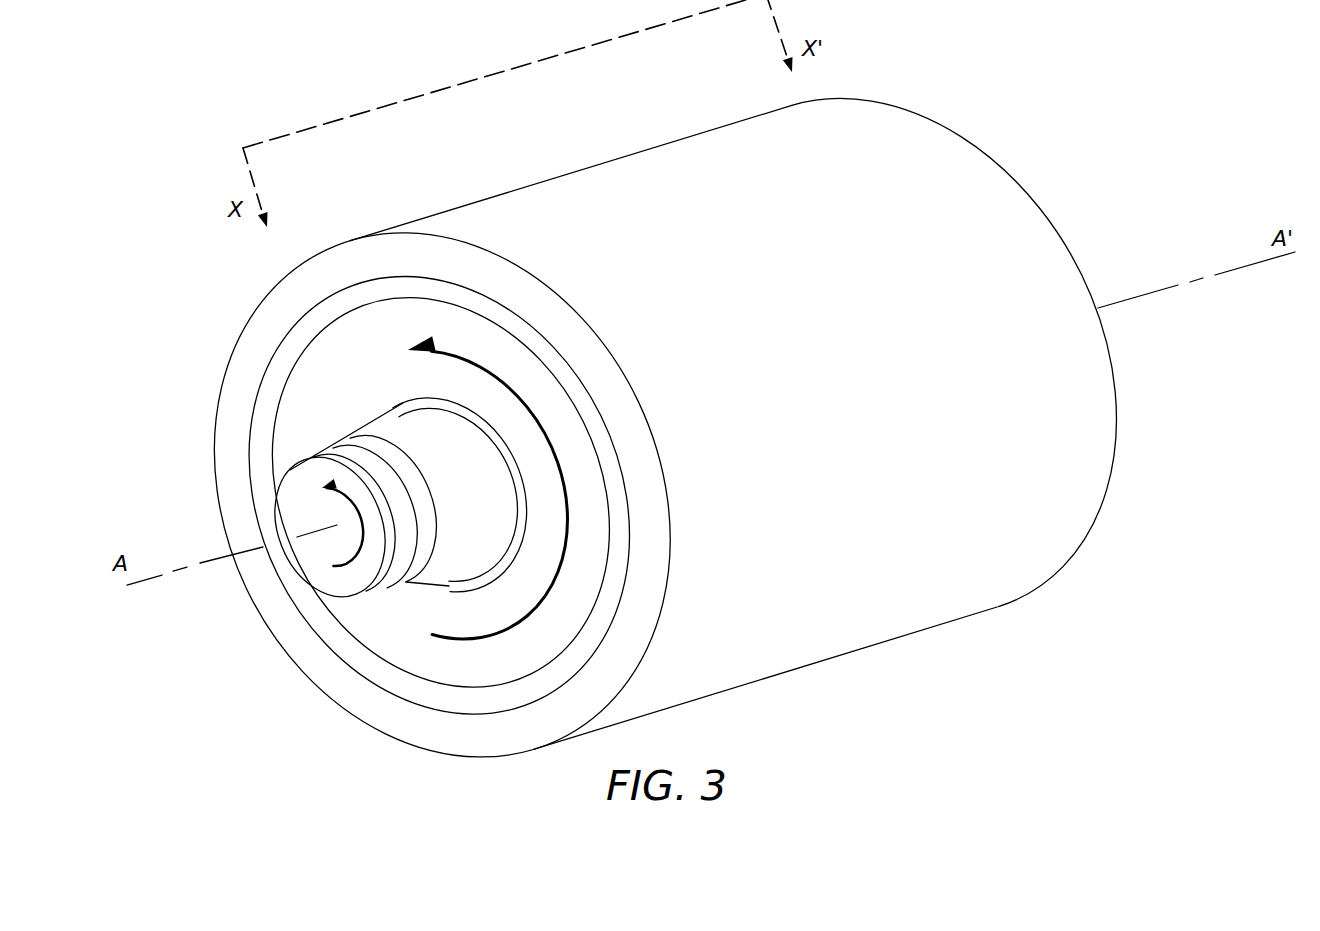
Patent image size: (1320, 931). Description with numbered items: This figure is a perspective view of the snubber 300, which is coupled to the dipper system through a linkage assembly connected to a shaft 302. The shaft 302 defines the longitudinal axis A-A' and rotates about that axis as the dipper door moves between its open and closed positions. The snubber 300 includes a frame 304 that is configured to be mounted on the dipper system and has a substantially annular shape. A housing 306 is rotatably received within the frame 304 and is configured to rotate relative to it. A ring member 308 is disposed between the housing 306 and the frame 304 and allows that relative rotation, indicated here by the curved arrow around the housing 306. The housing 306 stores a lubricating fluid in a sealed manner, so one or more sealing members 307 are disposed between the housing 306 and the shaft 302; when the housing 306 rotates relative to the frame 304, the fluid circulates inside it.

The snubber 300 is at (176, 192).
The shaft 302 is at (300, 505).
The frame 304 is at (337, 263).
The housing 306 is at (457, 334).
The sealing member 307 is at (373, 410).
The ring member 308 is at (402, 288).